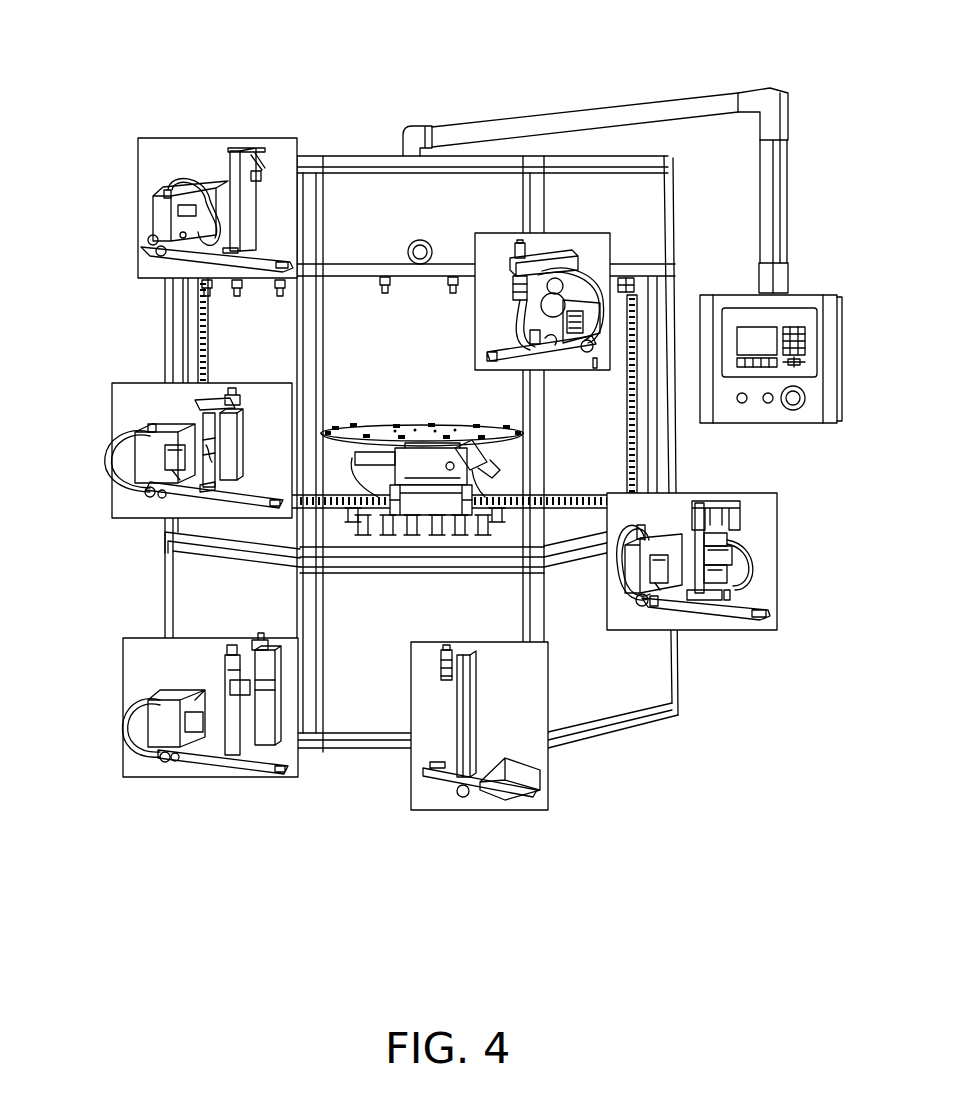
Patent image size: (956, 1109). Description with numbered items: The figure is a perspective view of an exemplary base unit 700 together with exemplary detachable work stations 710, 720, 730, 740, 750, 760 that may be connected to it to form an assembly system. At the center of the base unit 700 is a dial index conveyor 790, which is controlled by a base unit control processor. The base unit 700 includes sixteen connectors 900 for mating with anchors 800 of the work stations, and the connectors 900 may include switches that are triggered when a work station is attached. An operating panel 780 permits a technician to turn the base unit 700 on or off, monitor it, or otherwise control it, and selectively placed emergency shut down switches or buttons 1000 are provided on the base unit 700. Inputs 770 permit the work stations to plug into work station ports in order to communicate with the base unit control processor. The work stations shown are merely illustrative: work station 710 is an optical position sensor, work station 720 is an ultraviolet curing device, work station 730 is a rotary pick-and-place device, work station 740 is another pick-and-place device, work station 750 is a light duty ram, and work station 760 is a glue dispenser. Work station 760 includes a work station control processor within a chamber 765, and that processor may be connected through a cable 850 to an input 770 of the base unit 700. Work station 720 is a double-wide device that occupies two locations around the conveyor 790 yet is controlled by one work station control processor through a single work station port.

The base unit 700 is at (357, 778).
The work station 710 is at (450, 810).
The work station 720 is at (193, 777).
The work station 730 is at (713, 630).
The work station 740 is at (474, 250).
The work station 750 is at (203, 138).
The work station 760 is at (135, 440).
The chamber 765 is at (130, 400).
The inputs 770 is at (280, 297).
The operating panel 780 is at (768, 423).
The dial index conveyor 790 is at (383, 427).
The anchors 800 is at (290, 268).
The cable 850 is at (150, 243).
The connectors 900 is at (482, 497).
The emergency shut down switches or buttons 1000 is at (408, 243).